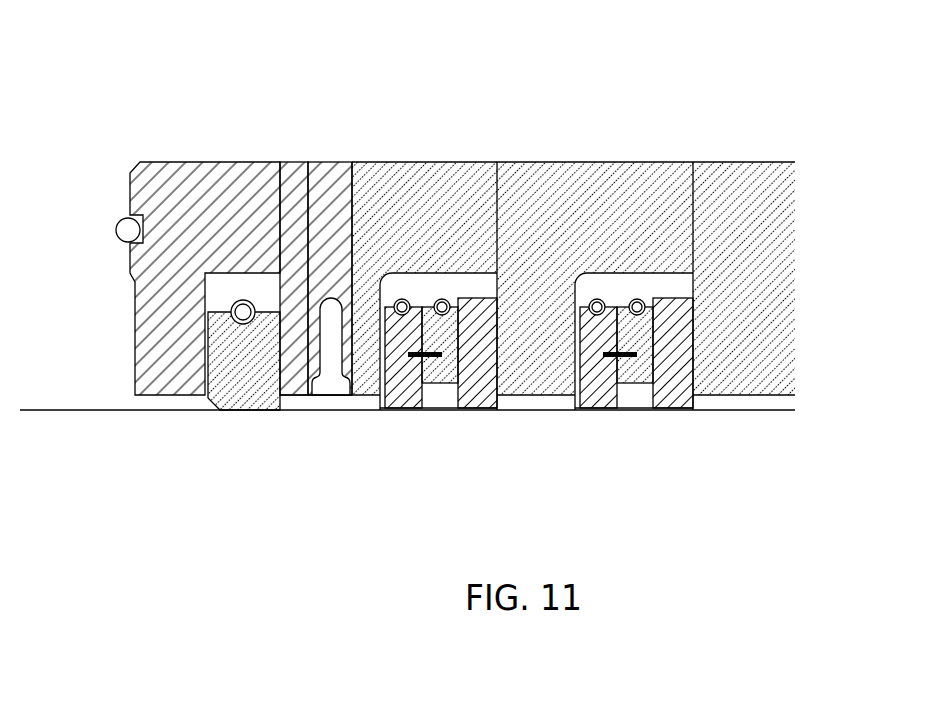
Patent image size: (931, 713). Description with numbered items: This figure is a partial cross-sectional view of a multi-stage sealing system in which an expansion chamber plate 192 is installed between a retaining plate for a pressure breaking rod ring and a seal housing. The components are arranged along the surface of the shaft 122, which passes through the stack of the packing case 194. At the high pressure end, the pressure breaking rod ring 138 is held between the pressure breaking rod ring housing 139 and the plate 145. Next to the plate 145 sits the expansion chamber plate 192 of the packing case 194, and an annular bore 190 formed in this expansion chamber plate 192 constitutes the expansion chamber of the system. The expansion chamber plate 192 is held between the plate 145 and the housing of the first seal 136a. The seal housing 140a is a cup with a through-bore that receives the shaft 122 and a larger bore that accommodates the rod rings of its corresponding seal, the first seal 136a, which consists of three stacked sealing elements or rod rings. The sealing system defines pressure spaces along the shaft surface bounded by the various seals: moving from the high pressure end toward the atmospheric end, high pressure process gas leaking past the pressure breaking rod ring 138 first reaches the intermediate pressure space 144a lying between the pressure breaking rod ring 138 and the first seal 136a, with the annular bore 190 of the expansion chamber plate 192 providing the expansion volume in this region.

The packing case 194 is at (123, 137).
The pressure breaking rod ring housing 139 is at (210, 200).
The pressure breaking rod ring 138 is at (250, 362).
The plate 145 is at (290, 165).
The expansion chamber plate 192 is at (323, 173).
The annular bore 190 is at (328, 316).
The seal housing 140a is at (460, 188).
The first seal 136a is at (487, 393).
The intermediate pressure space 144a is at (347, 402).
The shaft 122 is at (118, 410).